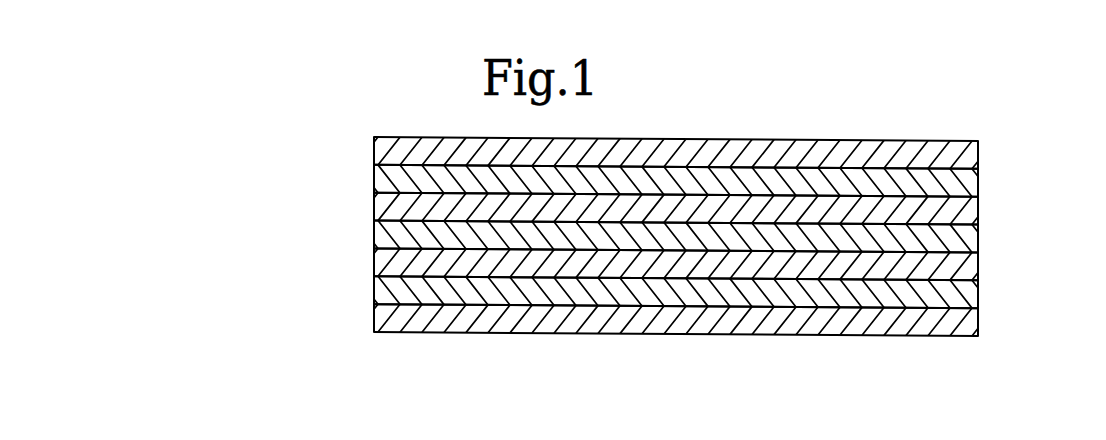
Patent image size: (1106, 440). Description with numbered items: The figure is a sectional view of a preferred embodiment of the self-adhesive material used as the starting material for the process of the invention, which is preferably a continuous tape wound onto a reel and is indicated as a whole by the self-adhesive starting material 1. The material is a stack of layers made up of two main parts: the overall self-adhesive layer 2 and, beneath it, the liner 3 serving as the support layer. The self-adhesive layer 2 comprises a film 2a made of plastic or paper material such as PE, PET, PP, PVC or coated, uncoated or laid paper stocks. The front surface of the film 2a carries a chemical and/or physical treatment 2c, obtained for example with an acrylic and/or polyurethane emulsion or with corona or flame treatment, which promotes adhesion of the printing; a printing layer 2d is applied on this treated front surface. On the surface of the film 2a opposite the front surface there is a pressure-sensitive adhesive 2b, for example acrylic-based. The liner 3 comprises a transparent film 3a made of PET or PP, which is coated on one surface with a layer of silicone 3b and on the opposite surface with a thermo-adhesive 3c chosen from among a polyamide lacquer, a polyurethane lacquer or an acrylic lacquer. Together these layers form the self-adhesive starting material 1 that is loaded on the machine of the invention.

The self-adhesive starting material 1 is at (365, 332).
The self-adhesive layer 2 is at (985, 248).
The film 2a is at (866, 204).
The pressure-sensitive adhesive 2b is at (913, 234).
The chemical and/or physical treatment 2c is at (814, 179).
The printing layer 2d is at (766, 152).
The liner 3 is at (985, 333).
The transparent film 3a is at (866, 289).
The layer of silicone 3b is at (920, 260).
The thermo-adhesive 3c is at (807, 317).